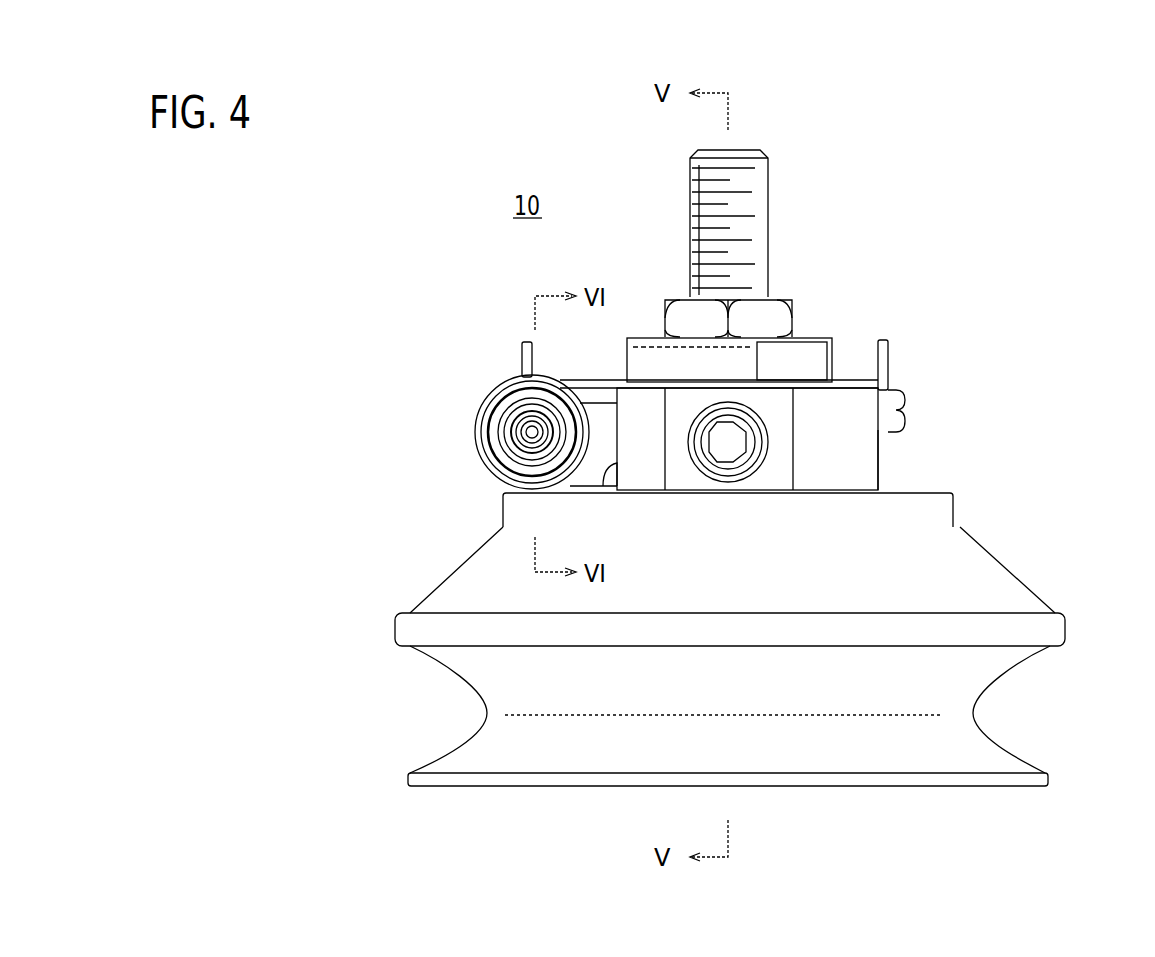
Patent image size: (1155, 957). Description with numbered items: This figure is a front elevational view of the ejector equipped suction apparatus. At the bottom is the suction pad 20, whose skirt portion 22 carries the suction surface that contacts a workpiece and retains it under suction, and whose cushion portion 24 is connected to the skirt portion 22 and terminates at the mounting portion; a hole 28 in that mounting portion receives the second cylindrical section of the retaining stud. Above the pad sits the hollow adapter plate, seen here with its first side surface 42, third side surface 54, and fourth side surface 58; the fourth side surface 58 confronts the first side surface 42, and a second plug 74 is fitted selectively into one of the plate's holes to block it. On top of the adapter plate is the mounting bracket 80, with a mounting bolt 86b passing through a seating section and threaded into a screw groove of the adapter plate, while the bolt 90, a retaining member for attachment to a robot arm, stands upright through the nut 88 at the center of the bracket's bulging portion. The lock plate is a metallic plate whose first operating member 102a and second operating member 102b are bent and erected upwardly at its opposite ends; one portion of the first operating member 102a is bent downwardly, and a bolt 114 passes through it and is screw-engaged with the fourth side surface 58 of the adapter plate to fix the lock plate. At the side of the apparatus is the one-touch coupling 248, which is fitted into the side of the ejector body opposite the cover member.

The suction pad 20 is at (447, 672).
The skirt portion 22 is at (820, 762).
The cushion portion 24 is at (1056, 632).
The hole 28 is at (946, 512).
The first side surface 42 is at (612, 486).
The third side surface 54 is at (684, 476).
The fourth side surface 58 is at (882, 470).
The second plug 74 is at (758, 443).
The mounting bracket 80 is at (625, 356).
The mounting bolt 86b is at (800, 350).
The nut 88 is at (786, 300).
The bolt (retaining member) 90 is at (772, 186).
The first operating member 102a is at (890, 356).
The second operating member 102b is at (518, 364).
The bolt 114 is at (906, 418).
The one-touch coupling 248 is at (478, 412).